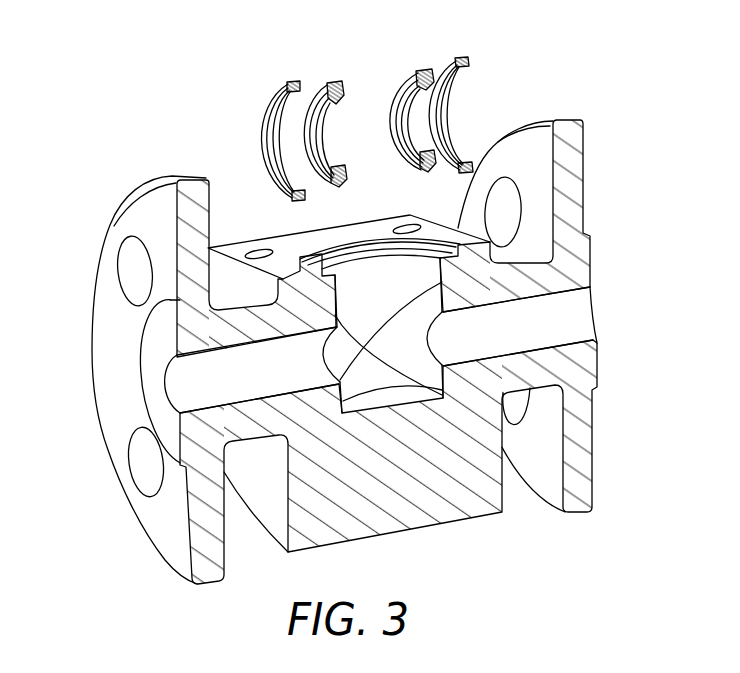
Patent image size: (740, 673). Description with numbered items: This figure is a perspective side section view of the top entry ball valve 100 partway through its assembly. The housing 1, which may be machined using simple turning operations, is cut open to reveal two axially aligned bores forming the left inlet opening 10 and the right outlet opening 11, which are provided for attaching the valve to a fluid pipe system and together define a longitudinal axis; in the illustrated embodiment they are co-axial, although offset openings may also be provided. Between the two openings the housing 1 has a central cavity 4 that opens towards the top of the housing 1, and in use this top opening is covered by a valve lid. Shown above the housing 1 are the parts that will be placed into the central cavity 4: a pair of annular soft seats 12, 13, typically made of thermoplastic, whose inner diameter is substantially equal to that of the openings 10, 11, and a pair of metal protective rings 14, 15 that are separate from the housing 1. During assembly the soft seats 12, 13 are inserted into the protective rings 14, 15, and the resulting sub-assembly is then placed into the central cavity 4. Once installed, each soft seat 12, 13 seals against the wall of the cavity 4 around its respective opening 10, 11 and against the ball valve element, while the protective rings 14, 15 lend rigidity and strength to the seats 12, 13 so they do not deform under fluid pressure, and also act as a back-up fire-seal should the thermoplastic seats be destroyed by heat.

The top entry ball valve 100 is at (186, 111).
The housing 1 is at (570, 270).
The central cavity 4 is at (398, 380).
The inlet opening 10 is at (176, 373).
The outlet opening 11 is at (570, 317).
The left soft seat 12 is at (336, 82).
The right soft seat 13 is at (422, 70).
The protective ring 14 is at (292, 81).
The protective ring 15 is at (462, 57).